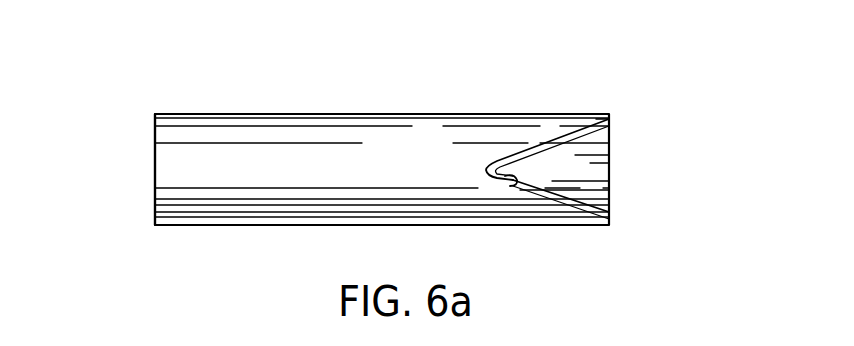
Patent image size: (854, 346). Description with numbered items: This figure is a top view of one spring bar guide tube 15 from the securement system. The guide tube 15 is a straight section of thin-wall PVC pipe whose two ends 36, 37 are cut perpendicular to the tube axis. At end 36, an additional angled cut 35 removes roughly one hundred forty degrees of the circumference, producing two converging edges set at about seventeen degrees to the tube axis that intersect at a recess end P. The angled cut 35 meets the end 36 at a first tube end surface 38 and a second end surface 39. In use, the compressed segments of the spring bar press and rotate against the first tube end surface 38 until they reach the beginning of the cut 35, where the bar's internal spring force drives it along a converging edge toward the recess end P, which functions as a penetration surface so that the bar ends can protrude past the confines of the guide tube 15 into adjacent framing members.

The guide tube 15 is at (333, 180).
The angled cut 35 is at (548, 145).
The tube end 36 is at (590, 163).
The tube end 37 is at (153, 178).
The first tube end surface 38 is at (607, 120).
The end surface 39 is at (610, 216).
The recess end P is at (516, 185).